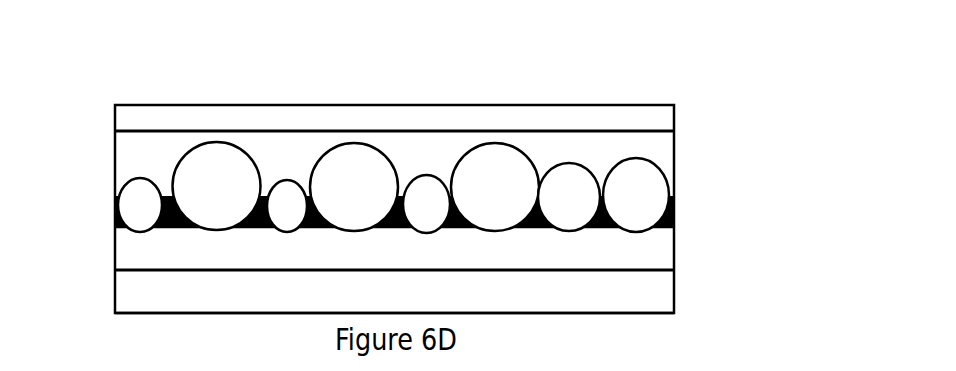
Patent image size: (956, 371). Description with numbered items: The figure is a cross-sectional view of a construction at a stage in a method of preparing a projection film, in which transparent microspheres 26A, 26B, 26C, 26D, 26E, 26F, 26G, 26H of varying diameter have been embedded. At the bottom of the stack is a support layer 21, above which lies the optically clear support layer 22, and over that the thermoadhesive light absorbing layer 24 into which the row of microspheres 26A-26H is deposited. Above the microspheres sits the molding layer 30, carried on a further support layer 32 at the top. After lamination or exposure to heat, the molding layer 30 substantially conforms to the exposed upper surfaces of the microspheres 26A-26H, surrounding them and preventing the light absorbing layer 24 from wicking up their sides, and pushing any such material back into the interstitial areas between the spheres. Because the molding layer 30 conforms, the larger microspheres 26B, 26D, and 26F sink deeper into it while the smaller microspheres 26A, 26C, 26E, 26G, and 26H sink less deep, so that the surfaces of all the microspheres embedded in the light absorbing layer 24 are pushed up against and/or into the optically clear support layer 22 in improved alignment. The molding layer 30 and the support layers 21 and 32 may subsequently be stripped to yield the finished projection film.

The support layer 32 is at (138, 117).
The molding layer 30 is at (148, 148).
The light absorbing layer 24 is at (118, 222).
The optically clear support layer 22 is at (173, 252).
The support layer 21 is at (168, 290).
The transparent microsphere 26A is at (140, 205).
The transparent microsphere 26B is at (217, 186).
The transparent microsphere 26C is at (287, 206).
The transparent microsphere 26D is at (354, 187).
The transparent microsphere 26E is at (426, 204).
The transparent microsphere 26F is at (495, 187).
The transparent microsphere 26G is at (569, 197).
The transparent microsphere 26H is at (636, 195).